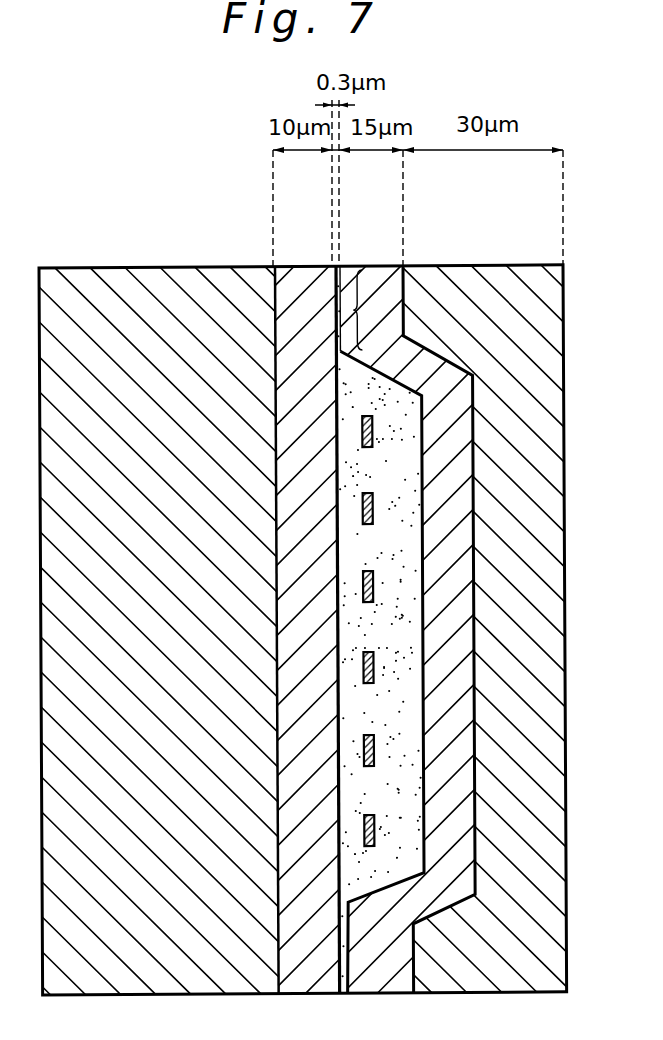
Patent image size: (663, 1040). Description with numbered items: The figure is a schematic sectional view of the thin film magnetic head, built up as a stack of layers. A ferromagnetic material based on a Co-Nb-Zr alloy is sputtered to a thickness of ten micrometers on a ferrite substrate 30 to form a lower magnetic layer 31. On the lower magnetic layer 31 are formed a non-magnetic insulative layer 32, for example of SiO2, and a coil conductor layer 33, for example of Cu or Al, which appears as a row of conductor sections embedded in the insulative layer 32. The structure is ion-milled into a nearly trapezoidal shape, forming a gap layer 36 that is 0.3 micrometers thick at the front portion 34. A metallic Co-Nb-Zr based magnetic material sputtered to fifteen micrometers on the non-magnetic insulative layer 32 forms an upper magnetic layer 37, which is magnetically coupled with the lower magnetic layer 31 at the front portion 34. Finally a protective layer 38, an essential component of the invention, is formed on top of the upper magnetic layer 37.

The ferrite substrate 30 is at (159, 613).
The lower magnetic layer 31 is at (307, 610).
The non-magnetic insulative layer 32 is at (362, 296).
The coil conductor layer 33 is at (328, 631).
The front portion 34 is at (377, 310).
The gap layer 36 is at (365, 610).
The upper magnetic layer 37 is at (434, 629).
The protective layer 38 is at (509, 442).